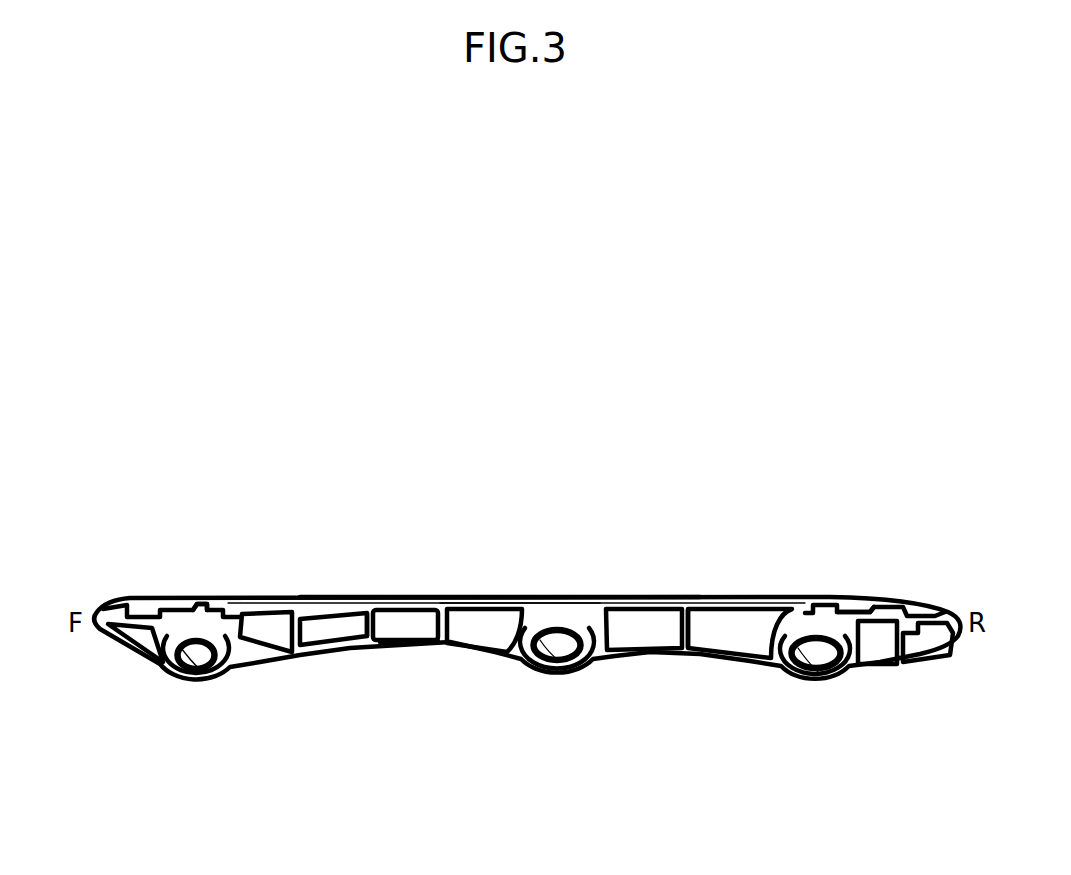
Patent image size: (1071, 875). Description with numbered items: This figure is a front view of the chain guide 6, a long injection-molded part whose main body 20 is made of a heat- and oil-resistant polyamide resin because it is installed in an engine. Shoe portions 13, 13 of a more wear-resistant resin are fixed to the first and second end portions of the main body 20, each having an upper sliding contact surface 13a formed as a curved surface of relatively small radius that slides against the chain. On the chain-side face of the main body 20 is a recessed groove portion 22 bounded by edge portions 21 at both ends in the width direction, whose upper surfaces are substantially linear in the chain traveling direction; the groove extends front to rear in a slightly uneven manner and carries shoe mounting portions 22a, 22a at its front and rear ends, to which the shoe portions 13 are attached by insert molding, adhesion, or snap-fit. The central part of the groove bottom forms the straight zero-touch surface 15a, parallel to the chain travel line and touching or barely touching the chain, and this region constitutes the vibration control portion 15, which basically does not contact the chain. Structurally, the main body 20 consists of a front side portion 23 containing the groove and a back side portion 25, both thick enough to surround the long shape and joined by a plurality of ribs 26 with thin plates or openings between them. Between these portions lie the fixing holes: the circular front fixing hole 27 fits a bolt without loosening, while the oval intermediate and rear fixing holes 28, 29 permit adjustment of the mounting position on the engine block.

The chain guide 6 is at (605, 435).
The shoe portion 13 is at (180, 598).
The sliding contact surface 13a is at (196, 598).
The vibration control portion 15 is at (652, 590).
The zero-touch surface 15a is at (522, 598).
The main body 20 is at (118, 596).
The edge portion 21 is at (318, 604).
The recessed groove portion 22 is at (262, 603).
The shoe mounting portion 22a is at (168, 598).
The front side portion 23 is at (420, 604).
The back side portion 25 is at (423, 648).
The rib 26 is at (355, 636).
The front fixing hole 27 is at (197, 680).
The intermediate fixing hole 28 is at (554, 672).
The rear fixing hole 29 is at (813, 678).